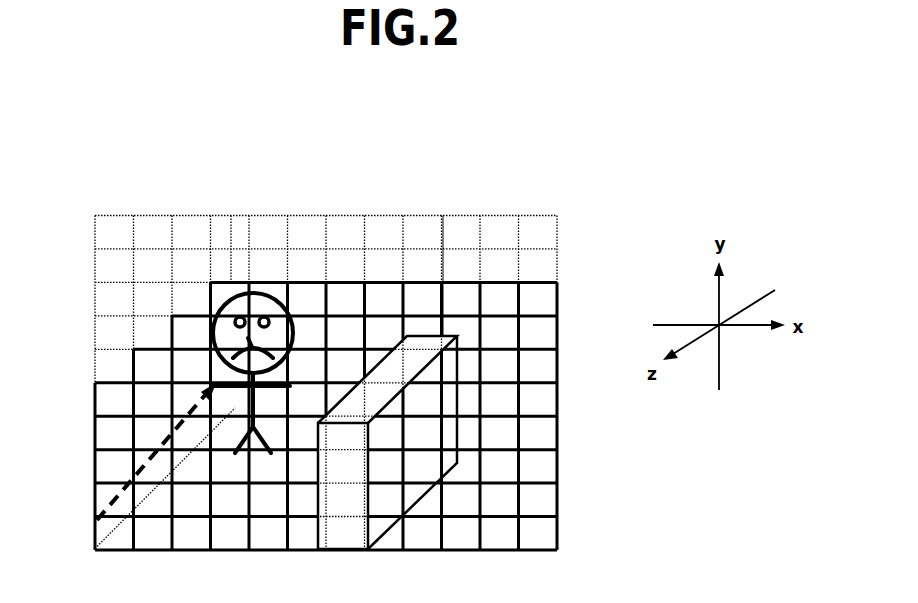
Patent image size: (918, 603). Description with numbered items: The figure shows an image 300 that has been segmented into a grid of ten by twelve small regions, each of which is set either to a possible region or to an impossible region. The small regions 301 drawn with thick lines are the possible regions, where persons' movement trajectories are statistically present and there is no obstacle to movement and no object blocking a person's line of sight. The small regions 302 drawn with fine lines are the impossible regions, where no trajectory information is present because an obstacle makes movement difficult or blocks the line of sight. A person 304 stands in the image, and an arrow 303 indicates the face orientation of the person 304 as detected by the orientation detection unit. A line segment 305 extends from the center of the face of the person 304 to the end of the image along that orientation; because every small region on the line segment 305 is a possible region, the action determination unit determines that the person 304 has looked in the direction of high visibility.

The image 300 is at (423, 192).
The small regions (possible regions) 301 is at (560, 490).
The small regions (impossible regions) 302 is at (540, 226).
The arrow 303 is at (217, 378).
The person 304 is at (210, 333).
The line segment 305 is at (112, 494).